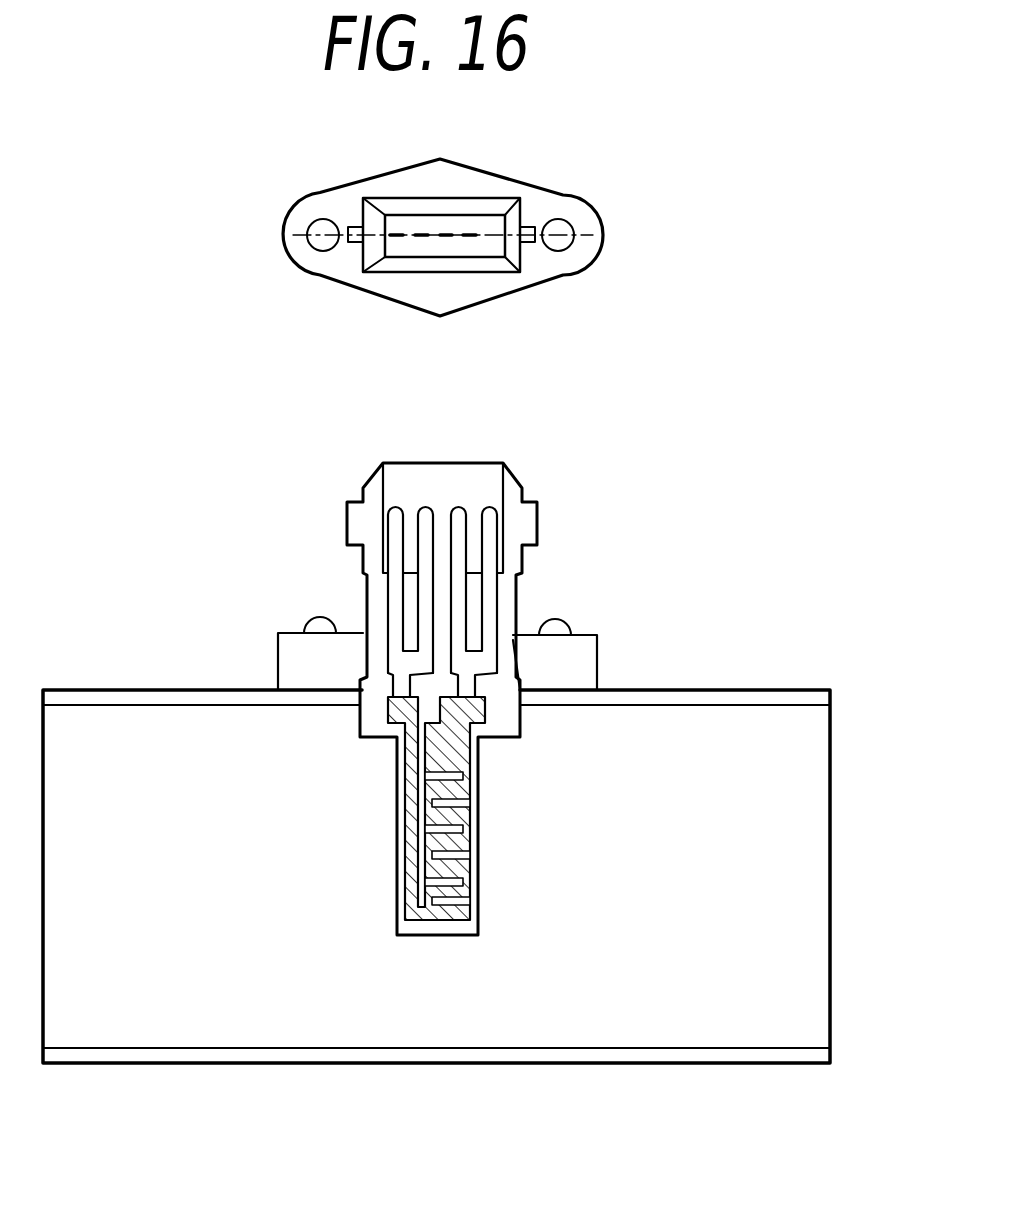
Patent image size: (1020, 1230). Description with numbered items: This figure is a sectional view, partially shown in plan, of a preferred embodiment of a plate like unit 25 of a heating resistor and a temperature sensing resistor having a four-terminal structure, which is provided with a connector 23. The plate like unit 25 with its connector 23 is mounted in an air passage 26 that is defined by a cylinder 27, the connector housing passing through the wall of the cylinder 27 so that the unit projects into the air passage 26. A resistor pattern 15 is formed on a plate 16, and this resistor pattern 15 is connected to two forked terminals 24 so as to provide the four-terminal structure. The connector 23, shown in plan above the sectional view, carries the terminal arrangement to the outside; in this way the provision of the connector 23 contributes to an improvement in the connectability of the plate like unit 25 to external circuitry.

The resistor pattern 15 is at (452, 913).
The plate 16 is at (392, 932).
The connector 23 is at (488, 265).
The forked terminals 24 is at (487, 507).
The plate like unit 25 is at (373, 660).
The air passage 26 is at (792, 878).
The cylinder 27 is at (760, 1048).